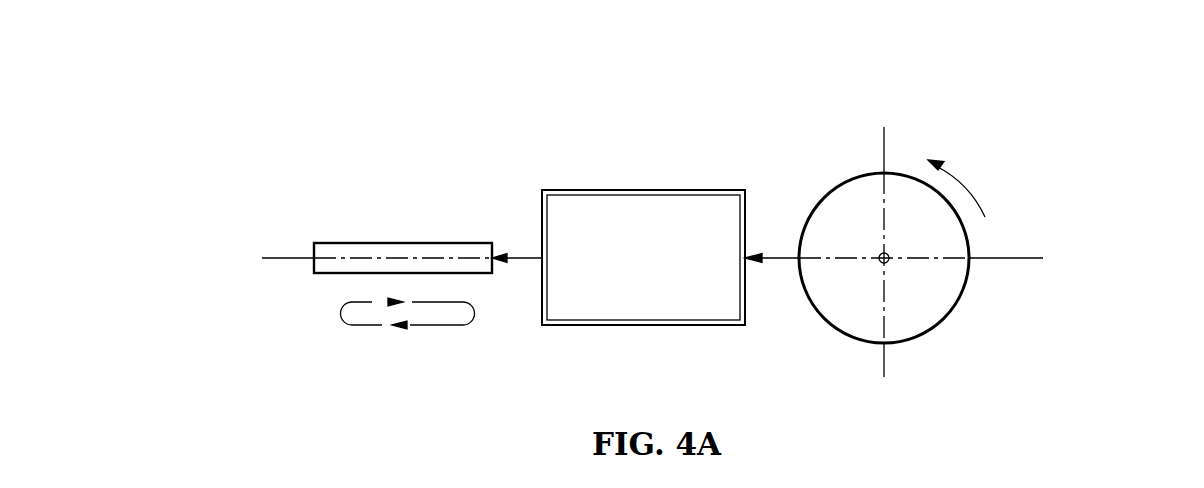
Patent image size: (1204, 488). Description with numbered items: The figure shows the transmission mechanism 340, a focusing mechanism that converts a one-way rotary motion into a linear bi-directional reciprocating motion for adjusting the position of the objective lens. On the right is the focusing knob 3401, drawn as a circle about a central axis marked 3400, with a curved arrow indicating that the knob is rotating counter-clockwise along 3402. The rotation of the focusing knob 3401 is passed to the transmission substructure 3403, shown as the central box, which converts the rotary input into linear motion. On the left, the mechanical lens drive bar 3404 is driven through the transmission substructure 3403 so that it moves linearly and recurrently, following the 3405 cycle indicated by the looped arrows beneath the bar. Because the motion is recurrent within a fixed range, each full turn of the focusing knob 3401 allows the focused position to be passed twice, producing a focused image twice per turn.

The transmission mechanism 340 is at (392, 113).
The rotation axis 3400 is at (889, 261).
The focusing knob 3401 is at (917, 183).
The counter-clockwise rotation direction 3402 is at (963, 177).
The transmission substructure 3403 is at (613, 190).
The mechanical lens drive bar 3404 is at (413, 248).
The reciprocating motion cycle 3405 is at (371, 301).